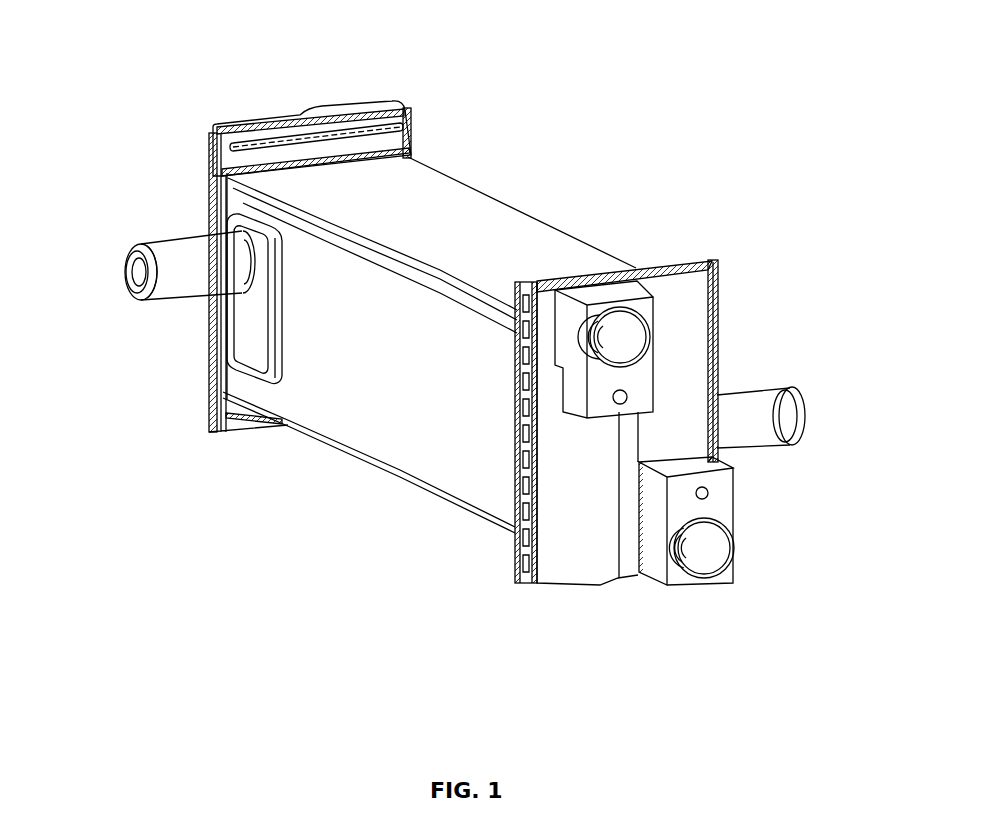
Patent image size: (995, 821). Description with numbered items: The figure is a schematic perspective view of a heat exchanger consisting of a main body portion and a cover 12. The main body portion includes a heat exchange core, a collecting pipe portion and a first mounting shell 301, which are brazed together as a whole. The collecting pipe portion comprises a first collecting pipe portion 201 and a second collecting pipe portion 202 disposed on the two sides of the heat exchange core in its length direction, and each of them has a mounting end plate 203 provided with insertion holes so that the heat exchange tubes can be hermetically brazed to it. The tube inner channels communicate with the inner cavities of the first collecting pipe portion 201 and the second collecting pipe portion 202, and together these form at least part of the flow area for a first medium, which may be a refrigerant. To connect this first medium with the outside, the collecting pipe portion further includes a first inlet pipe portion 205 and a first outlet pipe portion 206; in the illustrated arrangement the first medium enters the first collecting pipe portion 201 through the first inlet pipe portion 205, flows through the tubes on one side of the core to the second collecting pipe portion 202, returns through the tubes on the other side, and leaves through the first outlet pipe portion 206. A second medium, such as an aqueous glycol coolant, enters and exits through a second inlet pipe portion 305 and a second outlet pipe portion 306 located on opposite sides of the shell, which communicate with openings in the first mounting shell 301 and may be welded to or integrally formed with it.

The cover 12 is at (506, 233).
The first collecting pipe portion 201 is at (697, 310).
The second collecting pipe portion 202 is at (268, 128).
The mounting end plate 203 is at (406, 112).
The first inlet pipe portion 205 is at (612, 370).
The first outlet pipe portion 206 is at (707, 562).
The first mounting shell 301 is at (407, 427).
The second inlet pipe portion 305 is at (122, 266).
The second outlet pipe portion 306 is at (768, 417).